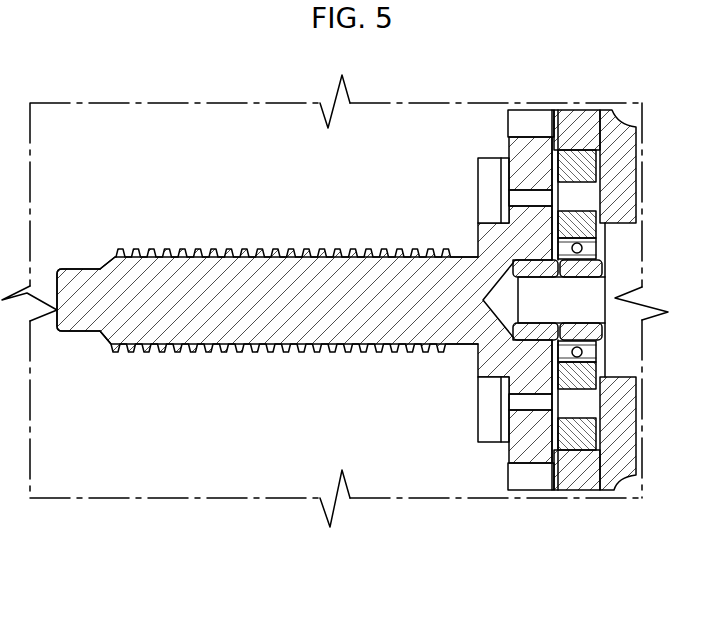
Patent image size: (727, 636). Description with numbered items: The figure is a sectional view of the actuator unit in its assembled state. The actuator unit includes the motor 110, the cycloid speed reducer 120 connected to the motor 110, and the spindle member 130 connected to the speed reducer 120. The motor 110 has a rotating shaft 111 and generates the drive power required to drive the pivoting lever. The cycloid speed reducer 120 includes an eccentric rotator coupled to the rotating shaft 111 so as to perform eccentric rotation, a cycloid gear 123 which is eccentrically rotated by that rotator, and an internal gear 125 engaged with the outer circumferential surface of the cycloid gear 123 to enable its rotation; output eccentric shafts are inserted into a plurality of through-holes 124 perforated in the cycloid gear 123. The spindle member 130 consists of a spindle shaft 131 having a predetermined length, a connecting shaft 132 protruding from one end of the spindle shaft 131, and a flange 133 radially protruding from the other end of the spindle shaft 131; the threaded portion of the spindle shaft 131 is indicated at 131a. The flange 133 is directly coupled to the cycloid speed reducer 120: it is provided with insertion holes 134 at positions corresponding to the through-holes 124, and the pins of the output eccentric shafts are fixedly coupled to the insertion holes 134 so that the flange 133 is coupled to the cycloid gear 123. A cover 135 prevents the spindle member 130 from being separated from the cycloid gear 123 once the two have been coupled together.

The motor 110 is at (626, 352).
The rotating shaft 111 is at (582, 289).
The cycloid speed reducer 120 is at (582, 491).
The cycloid gear 123 is at (583, 172).
The through-holes 124 is at (578, 208).
The internal gear 125 is at (575, 128).
The spindle member 130 is at (304, 329).
The spindle shaft 131 is at (289, 332).
The thread 131a is at (200, 345).
The connecting shaft 132 is at (78, 318).
The flange 133 is at (532, 167).
The insertion holes 134 is at (528, 193).
The cover 135 is at (482, 438).